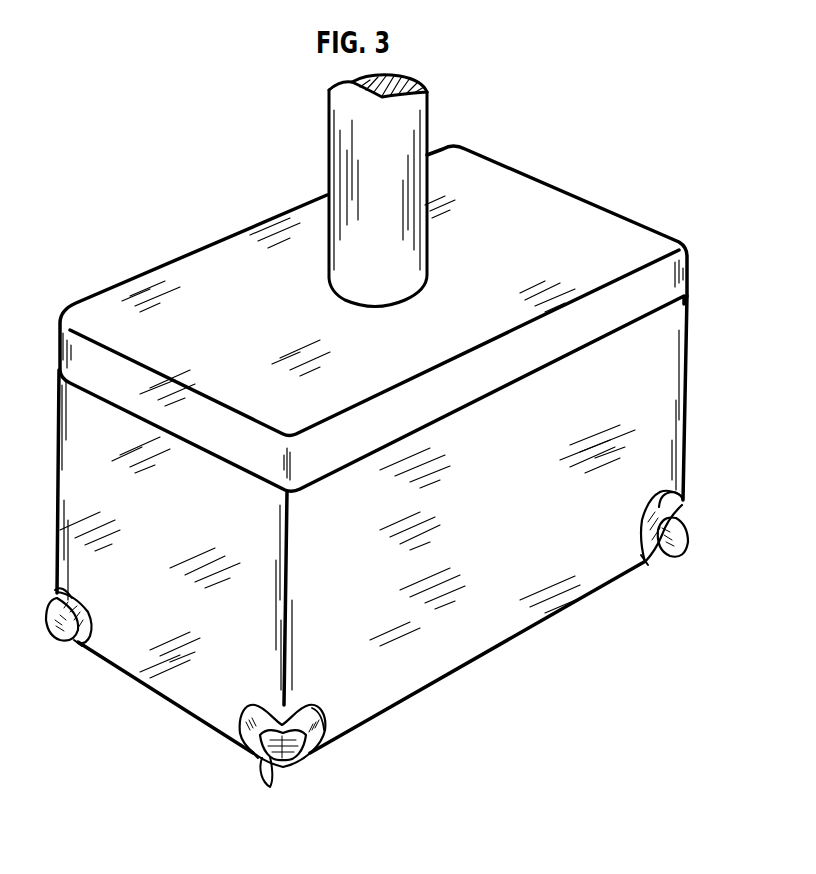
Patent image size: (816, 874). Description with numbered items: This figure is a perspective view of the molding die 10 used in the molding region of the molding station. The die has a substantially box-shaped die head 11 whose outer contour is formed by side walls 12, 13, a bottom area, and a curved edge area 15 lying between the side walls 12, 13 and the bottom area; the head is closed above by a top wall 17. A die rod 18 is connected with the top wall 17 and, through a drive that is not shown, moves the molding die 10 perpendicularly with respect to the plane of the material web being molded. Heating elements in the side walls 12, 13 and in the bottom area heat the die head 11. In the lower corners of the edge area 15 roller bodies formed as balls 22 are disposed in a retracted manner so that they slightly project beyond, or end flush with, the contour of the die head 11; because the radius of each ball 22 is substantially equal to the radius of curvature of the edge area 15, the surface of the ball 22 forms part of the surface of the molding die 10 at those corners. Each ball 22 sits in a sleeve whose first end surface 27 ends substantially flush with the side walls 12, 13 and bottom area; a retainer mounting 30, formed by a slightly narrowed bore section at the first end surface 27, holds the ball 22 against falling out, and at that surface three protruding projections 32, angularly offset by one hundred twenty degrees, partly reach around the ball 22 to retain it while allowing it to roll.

The molding die 10 is at (566, 171).
The die head 11 is at (686, 385).
The side wall 12 is at (662, 460).
The side wall 13 is at (90, 445).
The edge area 15 is at (500, 643).
The top wall 17 is at (639, 237).
The die rod 18 is at (407, 127).
The ball 22 is at (55, 635).
The first end surface 27 is at (58, 577).
The retainer mounting 30 is at (78, 648).
The protruding projection 32 is at (264, 790).